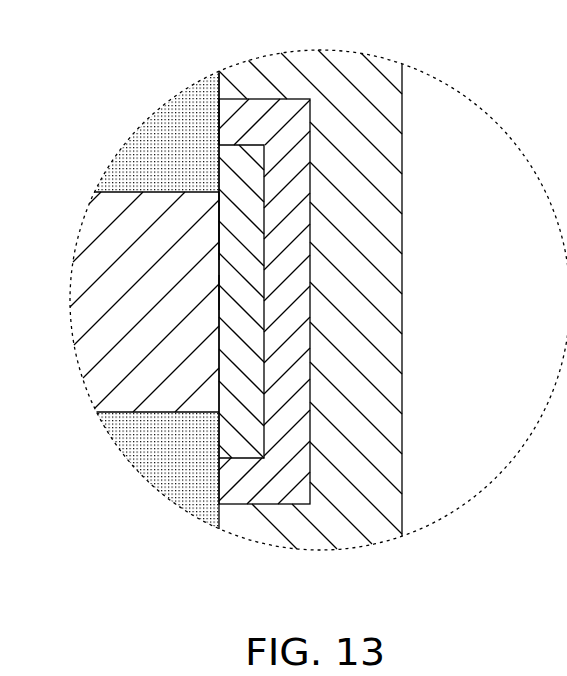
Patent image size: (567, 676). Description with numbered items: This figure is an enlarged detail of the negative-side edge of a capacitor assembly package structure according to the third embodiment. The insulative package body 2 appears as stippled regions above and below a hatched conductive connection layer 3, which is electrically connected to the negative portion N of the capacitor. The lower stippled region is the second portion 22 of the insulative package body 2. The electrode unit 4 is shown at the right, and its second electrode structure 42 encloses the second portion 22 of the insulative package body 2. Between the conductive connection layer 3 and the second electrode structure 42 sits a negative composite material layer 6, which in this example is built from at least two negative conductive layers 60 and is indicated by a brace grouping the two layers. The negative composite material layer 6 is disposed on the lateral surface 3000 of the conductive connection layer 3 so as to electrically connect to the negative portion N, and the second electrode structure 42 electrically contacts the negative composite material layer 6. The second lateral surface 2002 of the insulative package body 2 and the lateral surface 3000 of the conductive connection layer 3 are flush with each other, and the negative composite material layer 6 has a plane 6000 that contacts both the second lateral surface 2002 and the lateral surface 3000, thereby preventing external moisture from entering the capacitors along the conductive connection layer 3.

The insulative package body 2 is at (141, 126).
The second portion 22 is at (171, 476).
The conductive connection layer 3 is at (90, 228).
The electrode unit 4 is at (408, 149).
The second electrode structure 42 is at (383, 460).
The negative composite material layer 6 is at (356, 301).
The negative conductive layer 60 is at (237, 340).
The second lateral surface 2002 is at (234, 85).
The plane 6000 is at (205, 125).
The lateral surface 3000 is at (233, 221).
The negative portion N is at (233, 288).